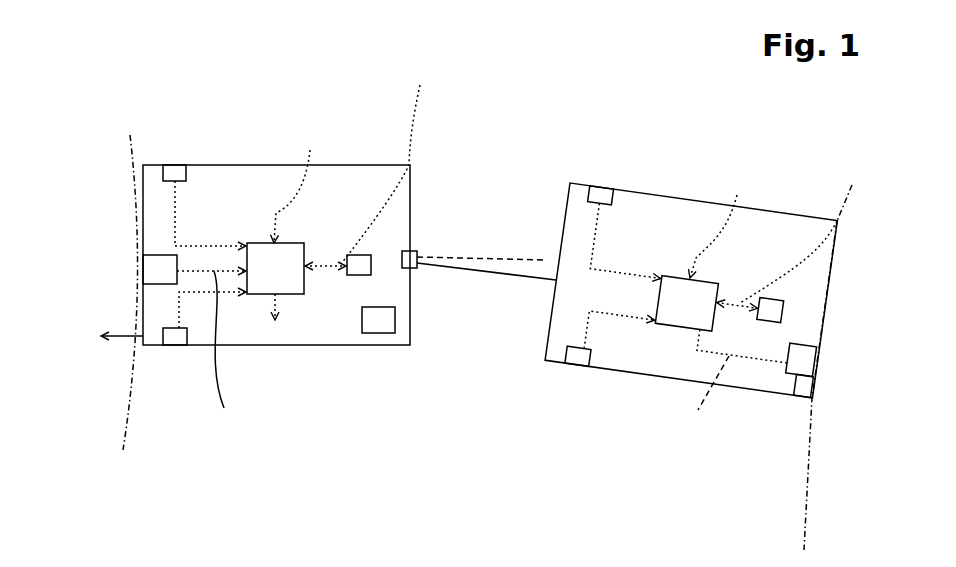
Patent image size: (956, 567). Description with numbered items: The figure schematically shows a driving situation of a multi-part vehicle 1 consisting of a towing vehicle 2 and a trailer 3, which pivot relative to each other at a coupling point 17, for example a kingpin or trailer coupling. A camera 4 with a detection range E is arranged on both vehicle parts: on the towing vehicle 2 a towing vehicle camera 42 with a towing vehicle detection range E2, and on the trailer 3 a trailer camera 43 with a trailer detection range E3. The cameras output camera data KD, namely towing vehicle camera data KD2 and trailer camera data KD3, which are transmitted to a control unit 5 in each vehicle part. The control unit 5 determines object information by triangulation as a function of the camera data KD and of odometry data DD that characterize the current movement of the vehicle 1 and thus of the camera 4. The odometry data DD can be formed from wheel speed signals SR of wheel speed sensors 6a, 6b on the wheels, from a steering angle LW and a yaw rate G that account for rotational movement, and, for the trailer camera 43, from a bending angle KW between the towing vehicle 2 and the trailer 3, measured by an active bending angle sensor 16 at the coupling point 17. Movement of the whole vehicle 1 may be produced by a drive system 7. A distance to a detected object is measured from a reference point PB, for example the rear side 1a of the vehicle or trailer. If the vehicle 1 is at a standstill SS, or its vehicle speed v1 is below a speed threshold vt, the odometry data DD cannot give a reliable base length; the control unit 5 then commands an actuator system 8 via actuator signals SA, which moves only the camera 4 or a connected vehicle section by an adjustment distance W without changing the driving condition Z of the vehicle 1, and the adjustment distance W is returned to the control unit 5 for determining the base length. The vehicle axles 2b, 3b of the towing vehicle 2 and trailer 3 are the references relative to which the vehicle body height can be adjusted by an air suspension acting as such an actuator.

The multi-part vehicle 1 is at (438, 405).
The driving condition Z is at (444, 480).
The standstill SS is at (444, 480).
The speed threshold vt is at (444, 480).
The rear side of the vehicle 1a is at (874, 325).
The reference point PB is at (838, 221).
The towing vehicle 2 is at (140, 173).
The vehicle axle of the towing vehicle 2b is at (170, 363).
The trailer 3 is at (619, 374).
The vehicle axle of the trailer 3b is at (570, 377).
The camera 4 is at (468, 340).
The towing vehicle camera 42 is at (157, 267).
The trailer camera 43 is at (797, 397).
The control unit 5 is at (266, 283).
The wheel speed sensor 6a is at (340, 132).
The wheel speed sensor 6b is at (173, 173).
The drive system 7 is at (395, 320).
The actuator system 8 is at (359, 275).
The bending angle sensor 16 is at (414, 268).
The coupling point 17 is at (413, 251).
The wheel speed signals SR is at (224, 245).
The odometry data DD is at (253, 94).
The steering angle LW is at (531, 194).
The yaw rate G is at (531, 194).
The bending angle KW is at (534, 277).
The actuator signals SA is at (640, 178).
The adjustment distance W is at (640, 178).
The detection range E is at (468, 326).
The towing vehicle detection range E2 is at (140, 329).
The trailer detection range E3 is at (827, 311).
The camera data KD is at (470, 363).
The towing vehicle camera data KD2 is at (223, 362).
The trailer camera data KD3 is at (718, 405).
The vehicle speed v1 is at (127, 340).